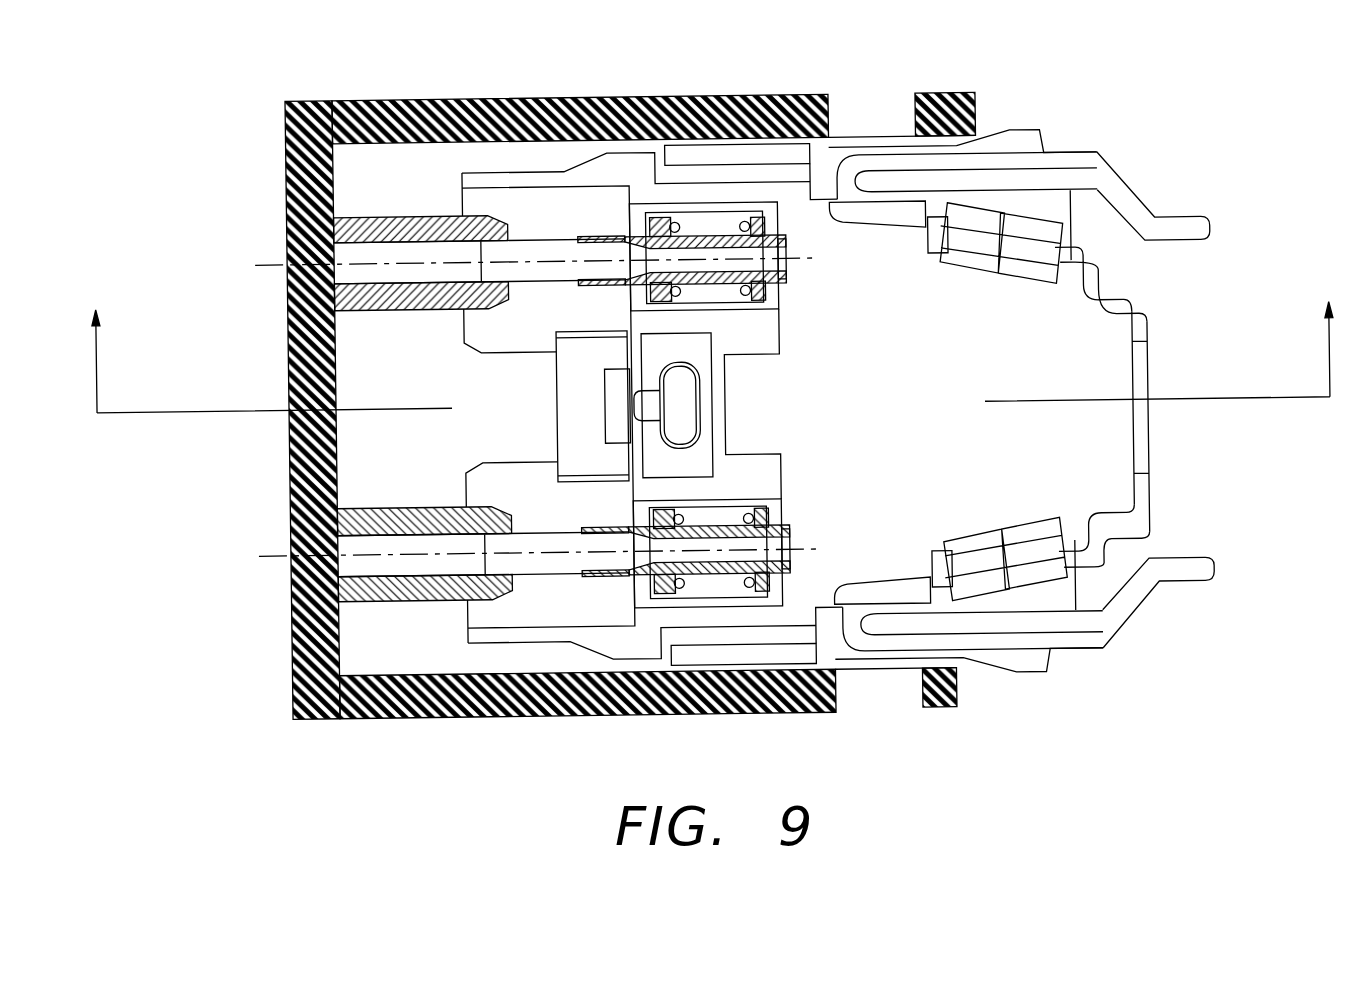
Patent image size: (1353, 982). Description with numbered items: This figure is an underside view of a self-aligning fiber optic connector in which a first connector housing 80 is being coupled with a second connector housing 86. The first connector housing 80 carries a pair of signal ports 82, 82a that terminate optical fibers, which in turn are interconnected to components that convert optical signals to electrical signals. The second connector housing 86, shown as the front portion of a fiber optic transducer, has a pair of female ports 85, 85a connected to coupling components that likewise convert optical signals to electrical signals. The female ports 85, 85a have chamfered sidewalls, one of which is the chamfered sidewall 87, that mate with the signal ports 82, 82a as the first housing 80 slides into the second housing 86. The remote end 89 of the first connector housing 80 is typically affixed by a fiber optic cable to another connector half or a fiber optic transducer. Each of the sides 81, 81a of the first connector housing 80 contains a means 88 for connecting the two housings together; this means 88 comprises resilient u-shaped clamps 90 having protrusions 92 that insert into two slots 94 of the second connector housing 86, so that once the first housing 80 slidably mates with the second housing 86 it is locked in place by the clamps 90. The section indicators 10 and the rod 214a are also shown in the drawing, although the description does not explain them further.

The section line 10- 10 is at (716, 337).
The first connector housing 80 is at (1025, 348).
The side 81 is at (863, 583).
The side 81a is at (882, 233).
The signal port 82 is at (575, 599).
The signal port 82a is at (580, 311).
The female port 85 is at (440, 504).
The female port 85a is at (440, 213).
The second connector housing 86 is at (291, 155).
The chamfered sidewall 87 is at (510, 518).
The means for connecting 88 is at (886, 152).
The remote end 89 is at (1143, 463).
The resilient u-shaped clamp 90 is at (1032, 133).
The protrusion 92 is at (1053, 145).
The slot 94 is at (860, 112).
The connecting rod 214a is at (467, 257).